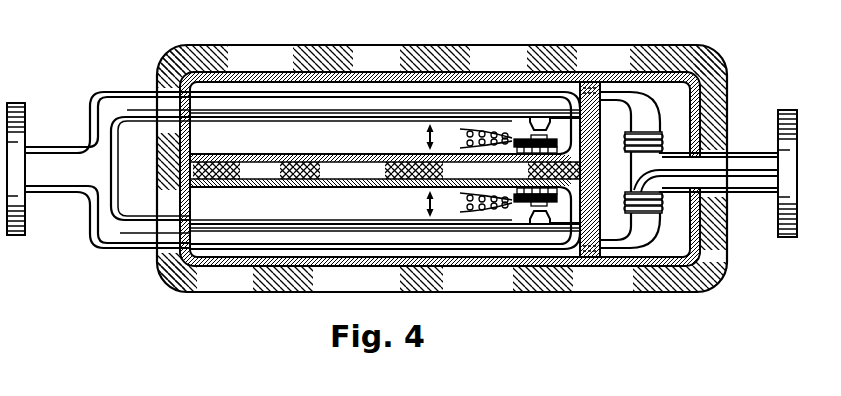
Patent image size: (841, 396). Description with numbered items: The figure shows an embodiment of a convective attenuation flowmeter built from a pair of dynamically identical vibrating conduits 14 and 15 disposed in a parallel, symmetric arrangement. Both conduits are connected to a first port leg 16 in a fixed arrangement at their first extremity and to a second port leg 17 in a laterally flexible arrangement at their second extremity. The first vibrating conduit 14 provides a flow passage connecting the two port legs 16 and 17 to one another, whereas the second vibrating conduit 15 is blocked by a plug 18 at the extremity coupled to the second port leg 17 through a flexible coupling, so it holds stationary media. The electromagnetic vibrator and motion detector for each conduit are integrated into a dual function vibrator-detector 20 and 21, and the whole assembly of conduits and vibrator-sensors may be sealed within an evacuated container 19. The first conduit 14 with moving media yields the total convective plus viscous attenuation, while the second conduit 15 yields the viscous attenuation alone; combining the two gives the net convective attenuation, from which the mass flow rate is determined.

The first vibrating conduit 14 is at (292, 93).
The second vibrating conduit 15 is at (283, 243).
The first port leg 16 is at (55, 147).
The second port leg 17 is at (757, 153).
The plug 18 is at (700, 178).
The evacuated container 19 is at (643, 272).
The dual function vibrator-detector 20 is at (557, 146).
The dual function vibrator-detector 21 is at (574, 222).